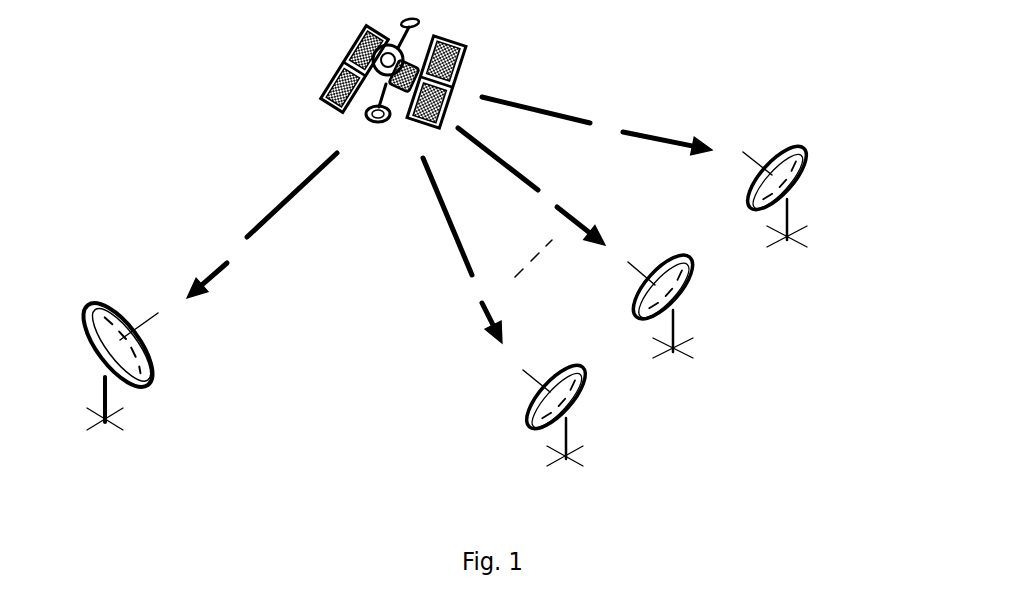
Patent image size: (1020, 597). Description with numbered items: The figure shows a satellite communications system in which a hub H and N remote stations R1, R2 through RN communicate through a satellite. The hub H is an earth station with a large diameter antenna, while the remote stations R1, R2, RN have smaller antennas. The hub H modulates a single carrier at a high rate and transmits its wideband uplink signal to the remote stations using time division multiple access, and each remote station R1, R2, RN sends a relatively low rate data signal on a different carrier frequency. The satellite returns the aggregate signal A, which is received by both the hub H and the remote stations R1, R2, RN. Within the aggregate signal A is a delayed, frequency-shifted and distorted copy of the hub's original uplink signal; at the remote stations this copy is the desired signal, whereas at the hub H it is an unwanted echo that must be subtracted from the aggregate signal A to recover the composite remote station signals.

The hub H is at (165, 280).
The remote station 1 R1 is at (722, 132).
The remote station 2 R2 is at (627, 235).
The remote station N RN is at (525, 350).
The aggregate signal A is at (307, 340).